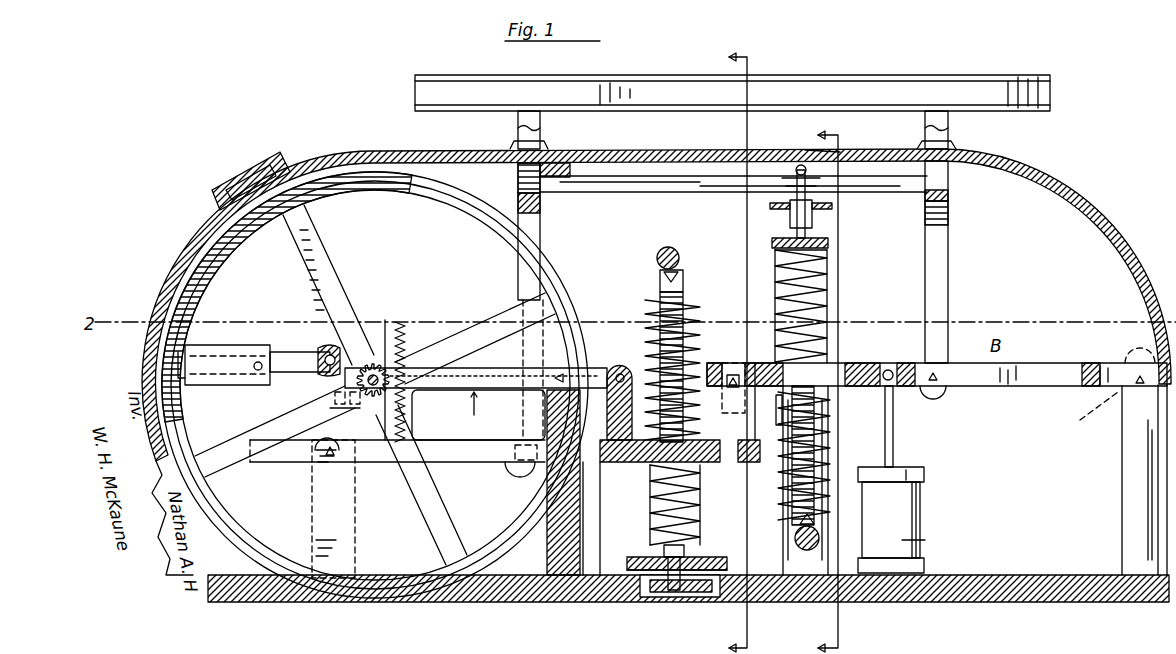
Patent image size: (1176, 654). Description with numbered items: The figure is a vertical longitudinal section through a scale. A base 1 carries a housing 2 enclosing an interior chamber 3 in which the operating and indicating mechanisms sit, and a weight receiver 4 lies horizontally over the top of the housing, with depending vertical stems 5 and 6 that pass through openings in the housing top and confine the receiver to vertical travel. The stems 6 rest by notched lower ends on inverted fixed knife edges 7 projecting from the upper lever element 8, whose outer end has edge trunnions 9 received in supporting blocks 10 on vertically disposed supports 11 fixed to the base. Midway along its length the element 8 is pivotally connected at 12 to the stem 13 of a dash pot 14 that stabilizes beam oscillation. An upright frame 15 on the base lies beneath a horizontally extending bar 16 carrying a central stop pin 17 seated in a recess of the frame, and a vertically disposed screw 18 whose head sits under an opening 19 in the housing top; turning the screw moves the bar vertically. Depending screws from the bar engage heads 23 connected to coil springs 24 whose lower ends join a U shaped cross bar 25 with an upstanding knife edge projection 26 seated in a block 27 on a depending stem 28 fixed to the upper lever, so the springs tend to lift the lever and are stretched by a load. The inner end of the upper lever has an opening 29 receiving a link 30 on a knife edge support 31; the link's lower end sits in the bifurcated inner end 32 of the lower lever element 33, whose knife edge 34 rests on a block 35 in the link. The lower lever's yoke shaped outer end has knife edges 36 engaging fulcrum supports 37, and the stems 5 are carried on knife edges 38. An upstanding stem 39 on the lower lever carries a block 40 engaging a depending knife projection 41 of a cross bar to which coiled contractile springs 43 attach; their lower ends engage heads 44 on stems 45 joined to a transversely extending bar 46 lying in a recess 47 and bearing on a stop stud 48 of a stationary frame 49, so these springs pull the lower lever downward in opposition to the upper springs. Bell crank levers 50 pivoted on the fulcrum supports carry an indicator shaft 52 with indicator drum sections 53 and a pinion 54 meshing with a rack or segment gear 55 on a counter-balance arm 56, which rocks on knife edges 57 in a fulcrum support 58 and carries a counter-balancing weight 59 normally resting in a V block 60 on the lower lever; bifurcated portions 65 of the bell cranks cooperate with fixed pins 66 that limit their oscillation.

The base 1 is at (925, 604).
The housing 2 is at (1122, 226).
The interior chamber 3 is at (896, 342).
The weight receiver 4 is at (895, 78).
The vertical stems 5 is at (540, 235).
The vertical stems 6 is at (948, 262).
The inverted fixed knife edges 7 is at (936, 388).
The upper lever element 8 is at (988, 387).
The edge trunnions 9 is at (1134, 361).
The supporting blocks 10 is at (1094, 414).
The vertically disposed supports 11 is at (1135, 478).
The pivotal connection 12 is at (890, 368).
The stem 13 is at (893, 450).
The dash pot 14 is at (906, 500).
The upright frame 15 is at (810, 580).
The horizontally extending bar 16 is at (822, 233).
The stop pin 17 is at (790, 216).
The vertically disposed screw 18 is at (798, 170).
The opening 19 is at (805, 150).
The heads 23 is at (828, 265).
The coil springs 24 is at (828, 300).
The U shaped cross bar 25 is at (905, 535).
The knife edge projection 26 is at (795, 531).
The block 27 is at (800, 500).
The depending stem 28 is at (830, 420).
The opening 29 is at (727, 364).
The link 30 is at (725, 405).
The knife edge support 31 is at (757, 365).
The bifurcated inner end 32 is at (708, 462).
The lower lever element 33 is at (468, 458).
The knife edge 34 is at (779, 405).
The block 35 is at (750, 466).
The knife edges 36 is at (334, 452).
The fulcrum supports 37 is at (345, 528).
The knife edges 38 is at (520, 469).
The upstanding stem 39 is at (683, 296).
The block 40 is at (654, 280).
The depending knife projection 41 is at (679, 262).
The coiled contractile springs 43 is at (700, 305).
The heads 44 is at (641, 570).
The stems 45 is at (683, 553).
The transversely extending bar 46 is at (666, 594).
The recess 47 is at (720, 600).
The stop stud 48 is at (686, 593).
The stationary frame 49 is at (630, 568).
The bell crank levers 50 is at (292, 345).
The indicator shaft 52 is at (386, 348).
The indicator drum sections 53 is at (460, 198).
The pinion 54 is at (320, 375).
The rack or segment gear 55 is at (412, 415).
The counter-balance arm 56 is at (495, 369).
The knife edges 57 is at (556, 378).
The fulcrum support 58 is at (576, 504).
The counter-balancing weight 59 is at (628, 384).
The V block 60 is at (590, 468).
The bifurcated portions 65 is at (330, 398).
The fixed pins 66 is at (334, 408).